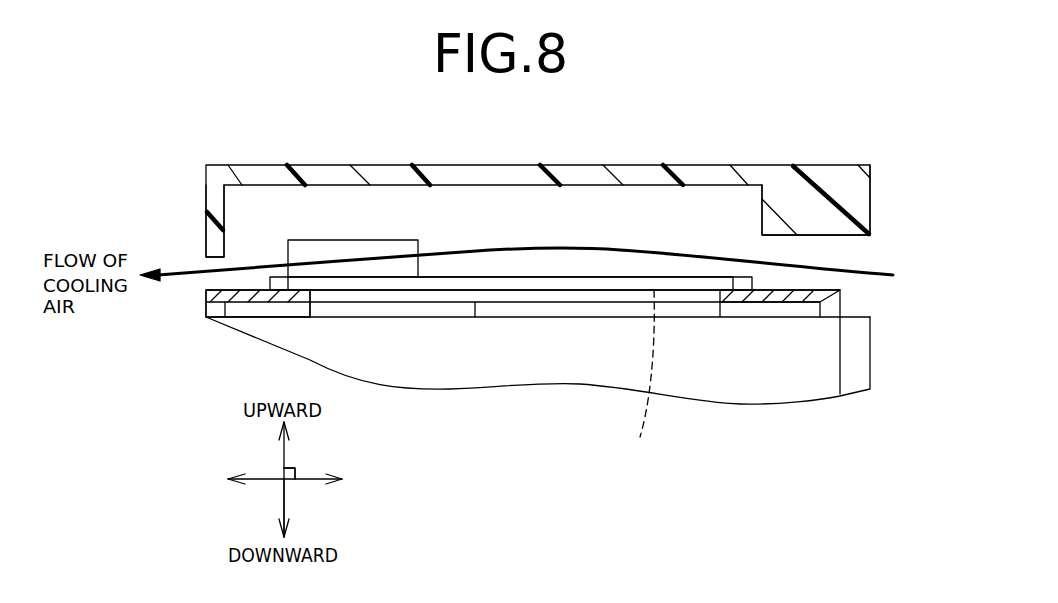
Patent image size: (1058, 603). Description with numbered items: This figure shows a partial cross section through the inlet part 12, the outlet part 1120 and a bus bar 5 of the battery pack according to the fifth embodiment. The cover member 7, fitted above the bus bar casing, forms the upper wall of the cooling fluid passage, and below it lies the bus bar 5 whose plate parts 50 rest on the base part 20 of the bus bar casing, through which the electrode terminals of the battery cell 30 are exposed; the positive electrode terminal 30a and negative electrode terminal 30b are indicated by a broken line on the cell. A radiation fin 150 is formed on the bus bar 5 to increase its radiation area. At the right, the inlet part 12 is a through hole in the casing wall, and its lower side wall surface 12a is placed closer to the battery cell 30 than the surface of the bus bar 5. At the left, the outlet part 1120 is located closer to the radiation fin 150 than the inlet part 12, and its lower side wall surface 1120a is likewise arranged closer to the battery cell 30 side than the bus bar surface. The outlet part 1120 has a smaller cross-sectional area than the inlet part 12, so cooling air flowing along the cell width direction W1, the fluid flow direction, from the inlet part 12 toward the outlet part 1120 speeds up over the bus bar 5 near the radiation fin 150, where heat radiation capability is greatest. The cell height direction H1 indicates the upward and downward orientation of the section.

The bus bar 5 is at (670, 277).
The cover member 7 is at (627, 178).
The inlet part 12 is at (852, 236).
The lower side wall surface 12a is at (842, 290).
The base part 20 is at (793, 300).
The battery cell 30 is at (753, 373).
The positive electrode terminal 30a is at (657, 379).
The negative electrode terminal 30b is at (640, 437).
The plate part 50 is at (590, 277).
The radiation fin 150 is at (354, 240).
The outlet part 1120 is at (215, 260).
The lower side wall surface 1120a is at (212, 282).
The cell width direction W1 is at (303, 479).
The cell height direction H1 is at (284, 505).